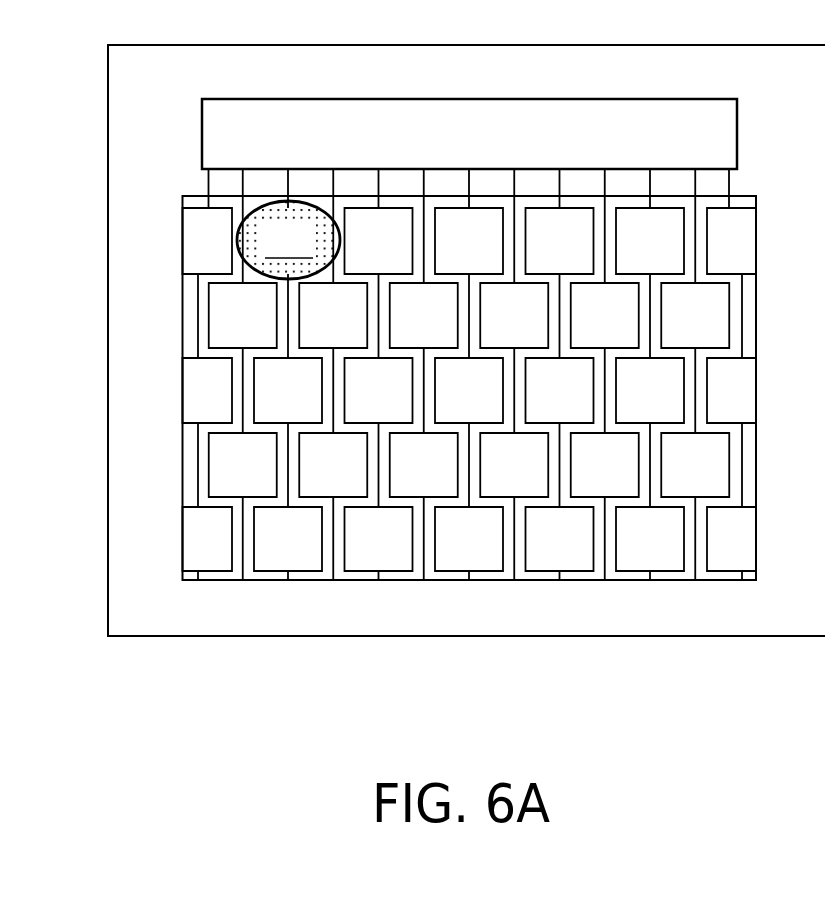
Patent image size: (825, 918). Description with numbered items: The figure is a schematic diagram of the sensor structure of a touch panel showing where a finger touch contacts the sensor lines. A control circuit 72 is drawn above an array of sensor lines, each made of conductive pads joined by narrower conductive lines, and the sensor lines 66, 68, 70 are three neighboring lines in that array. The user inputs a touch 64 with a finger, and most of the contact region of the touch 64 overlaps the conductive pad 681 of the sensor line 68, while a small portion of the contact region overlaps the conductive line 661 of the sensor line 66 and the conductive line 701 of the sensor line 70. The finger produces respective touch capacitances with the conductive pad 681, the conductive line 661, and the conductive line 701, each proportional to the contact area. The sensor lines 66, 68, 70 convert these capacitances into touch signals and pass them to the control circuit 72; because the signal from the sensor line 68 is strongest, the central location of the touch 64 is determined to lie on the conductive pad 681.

The touch 64 is at (250, 213).
The sensor line 66 is at (161, 437).
The sensor line 68 is at (288, 437).
The sensor line 70 is at (206, 437).
The conductive line 661 is at (240, 278).
The conductive pad 681 is at (288, 240).
The conductive line 701 is at (362, 284).
The control circuit 72 is at (737, 132).